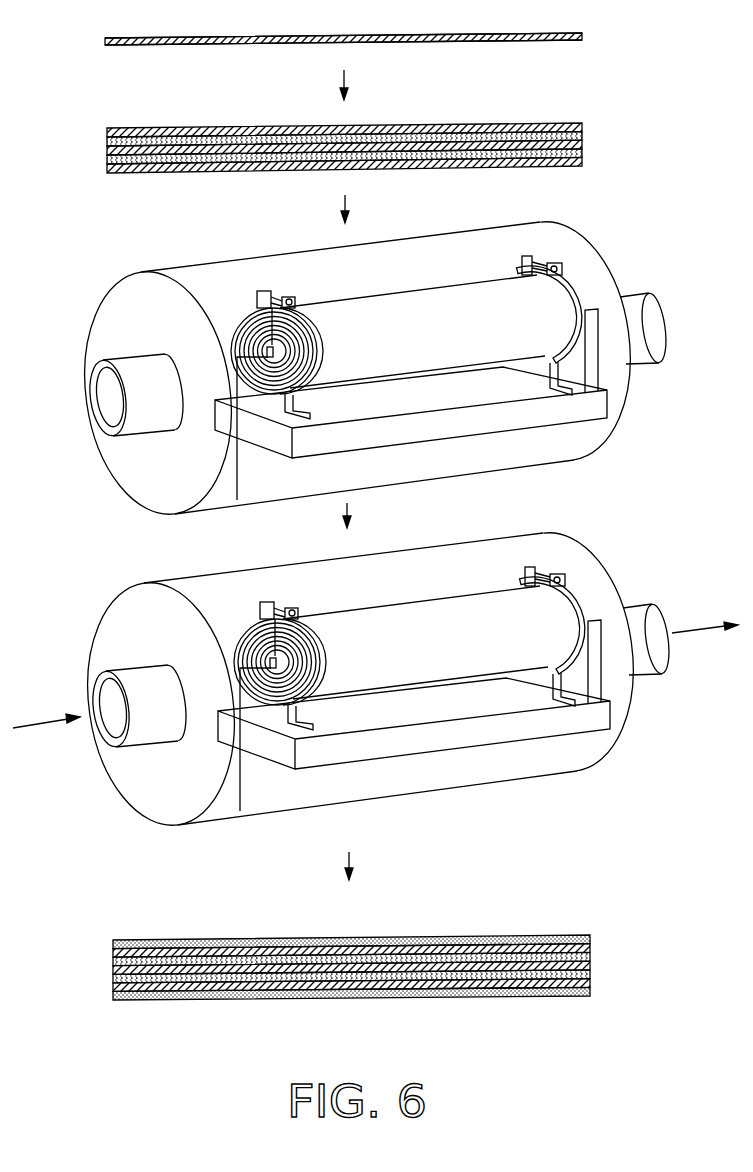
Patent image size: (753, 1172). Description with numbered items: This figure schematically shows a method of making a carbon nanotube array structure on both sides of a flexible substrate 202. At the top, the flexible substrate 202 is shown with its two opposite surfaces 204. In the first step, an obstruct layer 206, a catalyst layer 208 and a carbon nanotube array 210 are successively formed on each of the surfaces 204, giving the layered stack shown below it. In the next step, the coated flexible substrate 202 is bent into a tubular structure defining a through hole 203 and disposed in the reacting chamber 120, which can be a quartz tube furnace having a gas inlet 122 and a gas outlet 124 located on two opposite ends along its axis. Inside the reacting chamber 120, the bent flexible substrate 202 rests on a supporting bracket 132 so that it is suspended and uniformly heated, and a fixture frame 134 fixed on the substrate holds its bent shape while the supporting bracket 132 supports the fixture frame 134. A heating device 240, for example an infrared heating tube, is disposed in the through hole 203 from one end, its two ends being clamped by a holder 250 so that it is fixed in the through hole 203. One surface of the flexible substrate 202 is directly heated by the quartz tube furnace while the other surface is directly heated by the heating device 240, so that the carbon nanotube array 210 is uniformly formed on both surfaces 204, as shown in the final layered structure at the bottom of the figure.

The reacting chamber 120 is at (597, 260).
The gas inlet 122 is at (142, 368).
The gas outlet 124 is at (645, 315).
The supporting bracket 132 is at (565, 413).
The fixture frame 134 is at (575, 338).
The flexible substrate 202 is at (580, 38).
The through hole 203 is at (270, 367).
The surfaces 204 is at (582, 34).
The obstruct layer 206 is at (582, 136).
The catalyst layer 208 is at (582, 128).
The carbon nanotube array 210 is at (590, 940).
The heating device 240 is at (267, 343).
The holder 250 is at (235, 470).